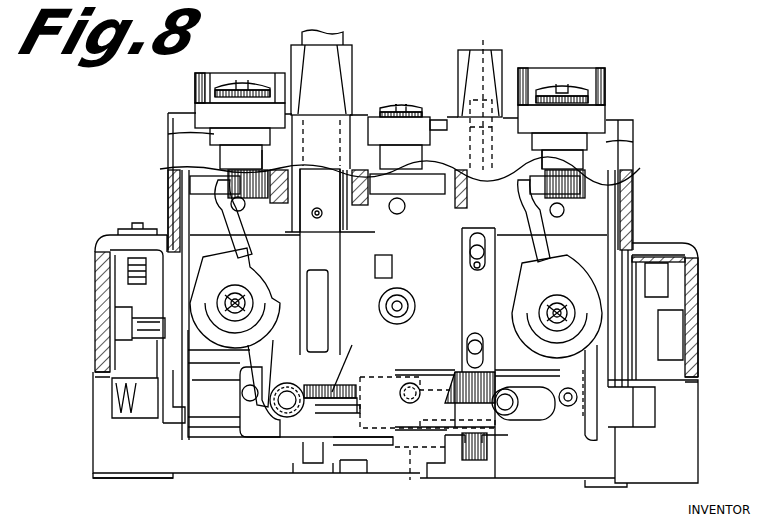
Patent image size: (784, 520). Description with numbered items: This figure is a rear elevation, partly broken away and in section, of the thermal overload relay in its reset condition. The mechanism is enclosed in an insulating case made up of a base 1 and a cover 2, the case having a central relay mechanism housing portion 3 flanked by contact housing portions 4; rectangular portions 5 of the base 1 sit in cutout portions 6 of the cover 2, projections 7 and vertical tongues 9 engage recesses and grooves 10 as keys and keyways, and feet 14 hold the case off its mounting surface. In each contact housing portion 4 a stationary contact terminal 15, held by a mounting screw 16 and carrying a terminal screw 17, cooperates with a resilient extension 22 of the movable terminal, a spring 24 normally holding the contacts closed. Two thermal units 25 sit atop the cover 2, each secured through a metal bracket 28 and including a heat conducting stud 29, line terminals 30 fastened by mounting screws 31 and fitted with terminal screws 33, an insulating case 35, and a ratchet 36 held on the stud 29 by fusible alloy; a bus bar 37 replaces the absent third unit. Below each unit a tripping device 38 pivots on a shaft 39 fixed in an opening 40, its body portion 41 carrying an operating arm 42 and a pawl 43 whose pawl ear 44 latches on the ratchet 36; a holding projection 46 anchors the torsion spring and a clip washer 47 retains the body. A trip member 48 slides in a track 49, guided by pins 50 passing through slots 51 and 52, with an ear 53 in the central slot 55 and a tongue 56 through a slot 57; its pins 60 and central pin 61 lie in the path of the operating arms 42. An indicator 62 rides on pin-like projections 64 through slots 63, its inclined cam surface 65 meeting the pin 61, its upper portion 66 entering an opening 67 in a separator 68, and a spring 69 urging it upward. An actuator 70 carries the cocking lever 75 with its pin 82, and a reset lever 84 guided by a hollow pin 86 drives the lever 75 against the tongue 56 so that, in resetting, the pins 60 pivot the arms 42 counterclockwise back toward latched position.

The base 1 is at (100, 455).
The cover 2 is at (635, 122).
The central relay mechanism housing portion 3 is at (447, 128).
The contact housing portion 4 is at (106, 236).
The rectangular portion 5 is at (100, 400).
The cutout portion 6 is at (92, 372).
The projection 7 is at (400, 476).
The vertical tongue 9 is at (180, 218).
The slot or groove 10 is at (168, 208).
The foot 14 is at (96, 480).
The stationary contact terminal 15 is at (112, 250).
The mounting screw 16 is at (114, 323).
The terminal screw 17 is at (130, 226).
The resilient extension 22 is at (165, 424).
The spring 24 is at (114, 412).
The thermal unit 25 is at (188, 94).
The metal bracket 28 is at (176, 180).
The heat conducting stud 29 is at (264, 168).
The line terminal 30 is at (168, 134).
The mounting screw 31 is at (240, 208).
The terminal screw 33 is at (250, 85).
The insulating case 35 is at (200, 74).
The ratchet 36 is at (243, 168).
The bus bar 37 is at (392, 110).
The tripping device 38 is at (272, 266).
The shaft 39 is at (246, 294).
The opening 40 is at (404, 298).
The body portion 41 is at (240, 262).
The operating arm 42 is at (265, 356).
The pawl 43 is at (222, 236).
The pawl ear 44 is at (220, 166).
The holding projection 46 is at (394, 258).
The clip washer 47 is at (236, 290).
The trip member 48 is at (272, 428).
The track 49 is at (208, 438).
The pin 50 is at (287, 410).
The slot 51 is at (335, 390).
The slot 52 is at (543, 418).
The ear 53 is at (380, 365).
The central slot 55 is at (315, 416).
The tongue 56 is at (413, 484).
The slot 57 is at (350, 464).
The pin 60 is at (241, 394).
The central pin 61 is at (410, 382).
The indicator 62 is at (468, 313).
The slot 63 is at (474, 270).
The pin-like projection 64 is at (474, 252).
The inclined cam surface 65 is at (402, 388).
The upper portion 66 is at (486, 44).
The opening 67 is at (506, 60).
The separator 68 is at (352, 53).
The spring 69 is at (470, 462).
The actuator 70 is at (325, 394).
The cocking lever 75 is at (385, 500).
The pin 82 is at (419, 11).
The reset lever 84 is at (338, 34).
The hollow pin 86 is at (317, 208).